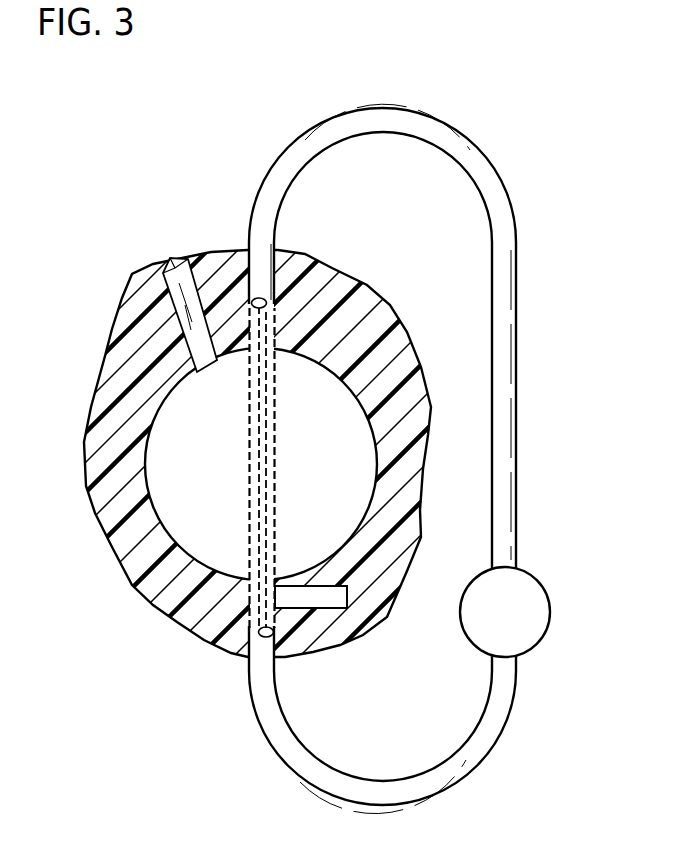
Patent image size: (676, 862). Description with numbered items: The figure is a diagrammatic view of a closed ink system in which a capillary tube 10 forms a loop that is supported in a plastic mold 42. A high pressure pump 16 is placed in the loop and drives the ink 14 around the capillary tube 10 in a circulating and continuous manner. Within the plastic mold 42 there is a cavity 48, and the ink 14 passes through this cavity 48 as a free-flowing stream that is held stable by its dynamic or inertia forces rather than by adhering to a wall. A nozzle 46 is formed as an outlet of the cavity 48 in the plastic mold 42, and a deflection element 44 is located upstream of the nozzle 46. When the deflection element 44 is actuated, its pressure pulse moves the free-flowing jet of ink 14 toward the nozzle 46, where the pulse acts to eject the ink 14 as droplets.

The capillary tube 10 is at (325, 759).
The ink 14 is at (272, 446).
The high pressure pump 16 is at (547, 595).
The plastic mold 42 is at (103, 374).
The deflection element 44 is at (347, 593).
The nozzle 46 is at (171, 258).
The cavity 48 is at (206, 449).